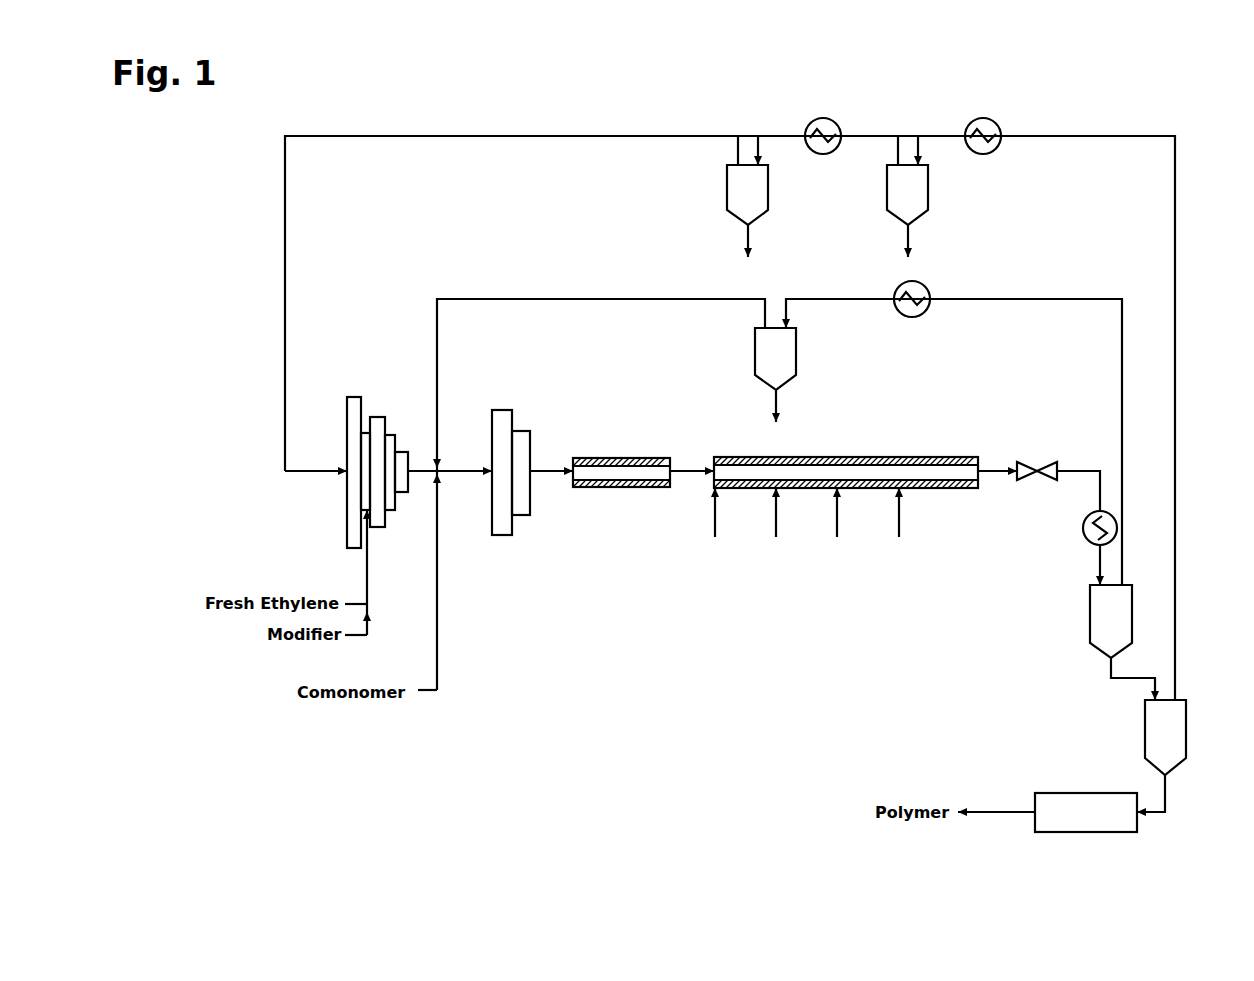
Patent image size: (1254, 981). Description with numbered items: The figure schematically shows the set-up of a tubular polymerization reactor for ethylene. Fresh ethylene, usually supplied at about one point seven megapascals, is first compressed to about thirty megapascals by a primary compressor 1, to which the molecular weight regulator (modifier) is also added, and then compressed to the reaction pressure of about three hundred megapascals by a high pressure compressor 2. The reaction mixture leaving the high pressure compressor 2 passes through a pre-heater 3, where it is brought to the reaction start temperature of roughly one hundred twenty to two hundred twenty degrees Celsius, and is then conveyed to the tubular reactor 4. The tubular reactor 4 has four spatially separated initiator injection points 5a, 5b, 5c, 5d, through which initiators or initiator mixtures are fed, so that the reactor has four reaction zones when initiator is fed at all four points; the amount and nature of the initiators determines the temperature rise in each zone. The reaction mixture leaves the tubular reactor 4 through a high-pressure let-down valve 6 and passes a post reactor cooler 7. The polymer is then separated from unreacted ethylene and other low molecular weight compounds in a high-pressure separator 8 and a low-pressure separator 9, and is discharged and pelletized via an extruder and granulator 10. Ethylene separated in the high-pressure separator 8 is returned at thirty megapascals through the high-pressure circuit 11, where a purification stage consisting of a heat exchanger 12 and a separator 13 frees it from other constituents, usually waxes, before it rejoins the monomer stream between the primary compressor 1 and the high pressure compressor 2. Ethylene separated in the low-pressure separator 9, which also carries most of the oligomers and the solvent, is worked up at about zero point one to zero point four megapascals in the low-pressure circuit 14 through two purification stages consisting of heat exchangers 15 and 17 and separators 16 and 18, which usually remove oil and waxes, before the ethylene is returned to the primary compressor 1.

The primary compressor 1 is at (366, 414).
The high pressure compressor 2 is at (520, 421).
The pre-heater 3 is at (640, 458).
The tubular reactor 4 is at (953, 457).
The initiator injection point 5a is at (719, 490).
The initiator injection point 5b is at (780, 490).
The initiator injection point 5c is at (841, 490).
The initiator injection point 5d is at (902, 490).
The high-pressure let-down valve 6 is at (1035, 460).
The post reactor cooler 7 is at (1082, 528).
The high-pressure separator 8 is at (1100, 613).
The low-pressure separator 9 is at (1178, 733).
The extruder and granulator 10 is at (1081, 800).
The high-pressure circuit 11 is at (852, 300).
The heat exchanger 12 is at (910, 318).
The separator 13 is at (765, 357).
The low-pressure circuit 14 is at (937, 136).
The heat exchanger 15 is at (983, 118).
The separator 16 is at (920, 195).
The heat exchanger 17 is at (823, 118).
The separator 18 is at (760, 195).